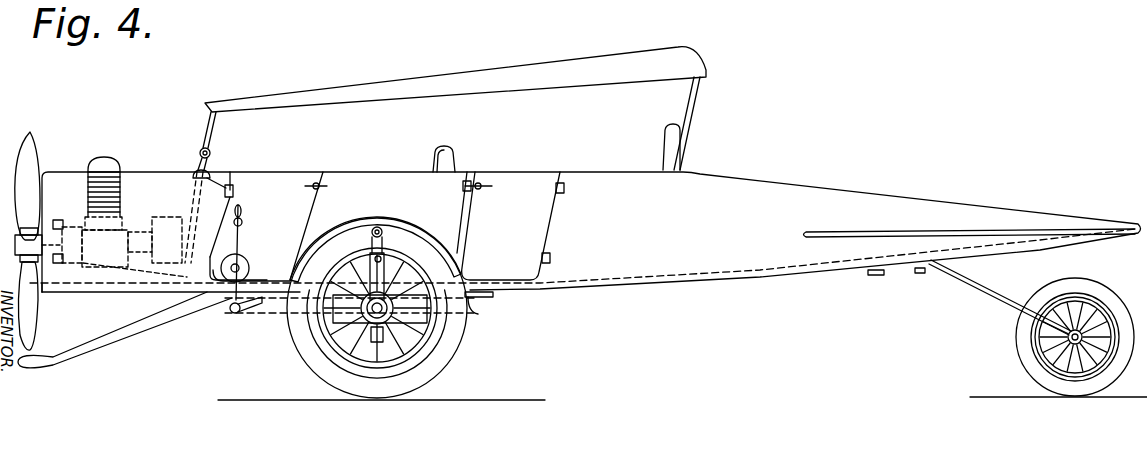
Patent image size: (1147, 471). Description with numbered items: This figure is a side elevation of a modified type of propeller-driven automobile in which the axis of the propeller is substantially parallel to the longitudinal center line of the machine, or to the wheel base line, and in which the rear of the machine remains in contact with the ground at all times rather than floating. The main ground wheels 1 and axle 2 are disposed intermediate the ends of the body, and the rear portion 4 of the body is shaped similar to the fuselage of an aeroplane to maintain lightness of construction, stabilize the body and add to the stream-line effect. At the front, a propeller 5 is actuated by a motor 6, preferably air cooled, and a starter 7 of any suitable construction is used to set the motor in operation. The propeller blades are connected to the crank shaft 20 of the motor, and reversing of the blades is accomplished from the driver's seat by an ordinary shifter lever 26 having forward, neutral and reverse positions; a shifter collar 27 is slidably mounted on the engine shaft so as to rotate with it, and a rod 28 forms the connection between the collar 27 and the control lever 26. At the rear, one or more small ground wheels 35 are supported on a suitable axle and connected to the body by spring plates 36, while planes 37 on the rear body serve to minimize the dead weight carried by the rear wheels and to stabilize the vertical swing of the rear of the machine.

The ground wheels 1 is at (292, 348).
The axle 2 is at (433, 352).
The rear portion of the body 4 is at (702, 183).
The propeller 5 is at (32, 143).
The motor 6 is at (113, 170).
The starter 7 is at (163, 220).
The crank shaft 20 is at (43, 284).
The shifter lever 26 is at (240, 222).
The shifter collar 27 is at (67, 227).
The rod 28 is at (135, 283).
The small ground wheels 35 is at (1020, 340).
The spring plates 36 is at (958, 282).
The planes 37 is at (830, 232).